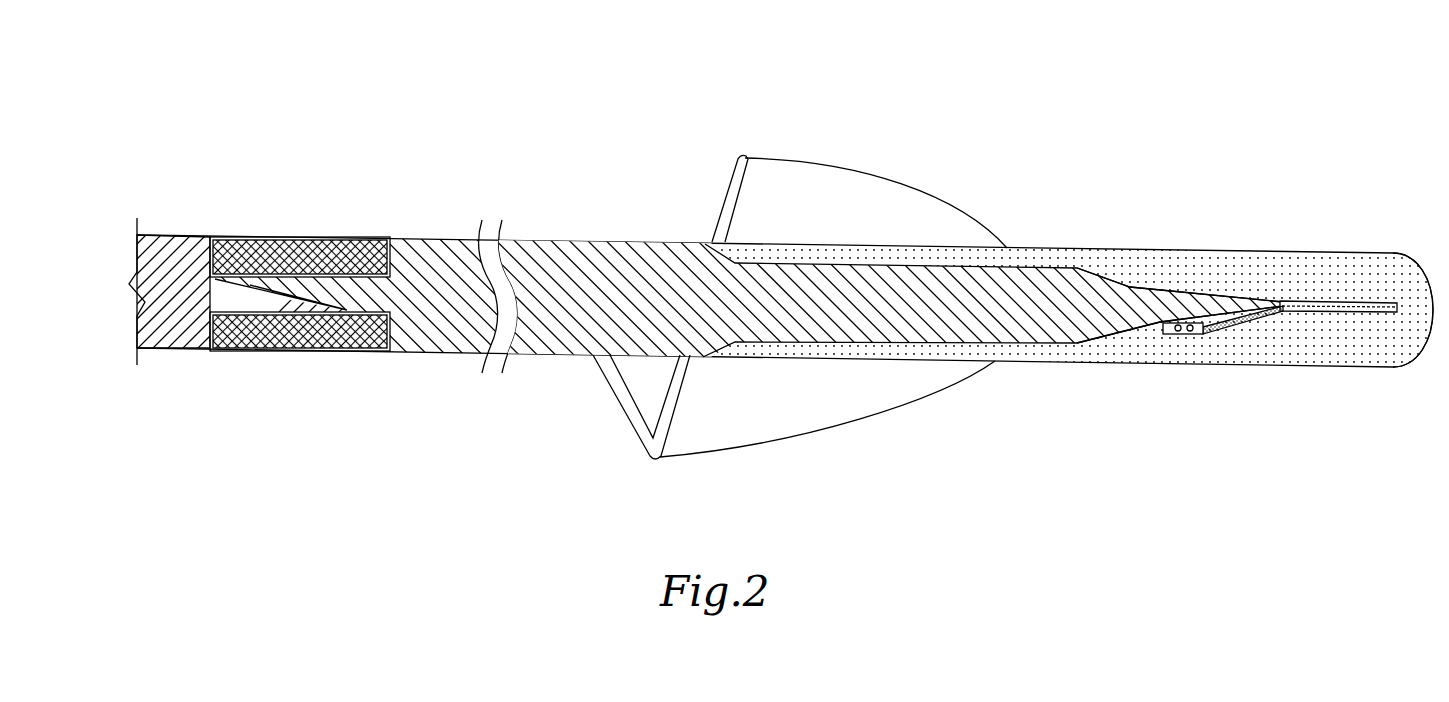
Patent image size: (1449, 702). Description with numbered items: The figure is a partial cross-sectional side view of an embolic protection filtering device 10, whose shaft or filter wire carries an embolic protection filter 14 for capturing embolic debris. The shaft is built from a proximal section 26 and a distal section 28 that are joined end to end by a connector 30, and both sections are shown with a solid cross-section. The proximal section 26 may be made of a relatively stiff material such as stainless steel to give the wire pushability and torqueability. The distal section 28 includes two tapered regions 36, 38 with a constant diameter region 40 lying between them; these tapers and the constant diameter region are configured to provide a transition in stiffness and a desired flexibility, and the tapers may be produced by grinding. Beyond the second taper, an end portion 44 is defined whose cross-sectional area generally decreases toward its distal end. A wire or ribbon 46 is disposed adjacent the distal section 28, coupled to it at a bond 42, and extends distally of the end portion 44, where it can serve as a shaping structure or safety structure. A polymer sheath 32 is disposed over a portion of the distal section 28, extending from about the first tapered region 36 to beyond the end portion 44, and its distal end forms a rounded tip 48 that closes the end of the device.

The embolic protection filtering device 10 is at (468, 118).
The embolic protection filter 14 is at (760, 138).
The proximal section 26 is at (178, 257).
The connector 30 is at (292, 250).
The tapered region 36 is at (728, 257).
The distal section 28 is at (913, 293).
The constant diameter region 40 is at (1020, 268).
The tapered region 38 is at (1107, 275).
The sheath 32 is at (1197, 260).
The end portion 44 is at (1250, 293).
The rounded tip 48 is at (1422, 270).
The bond 42 is at (1183, 334).
The wire or ribbon 46 is at (1293, 310).